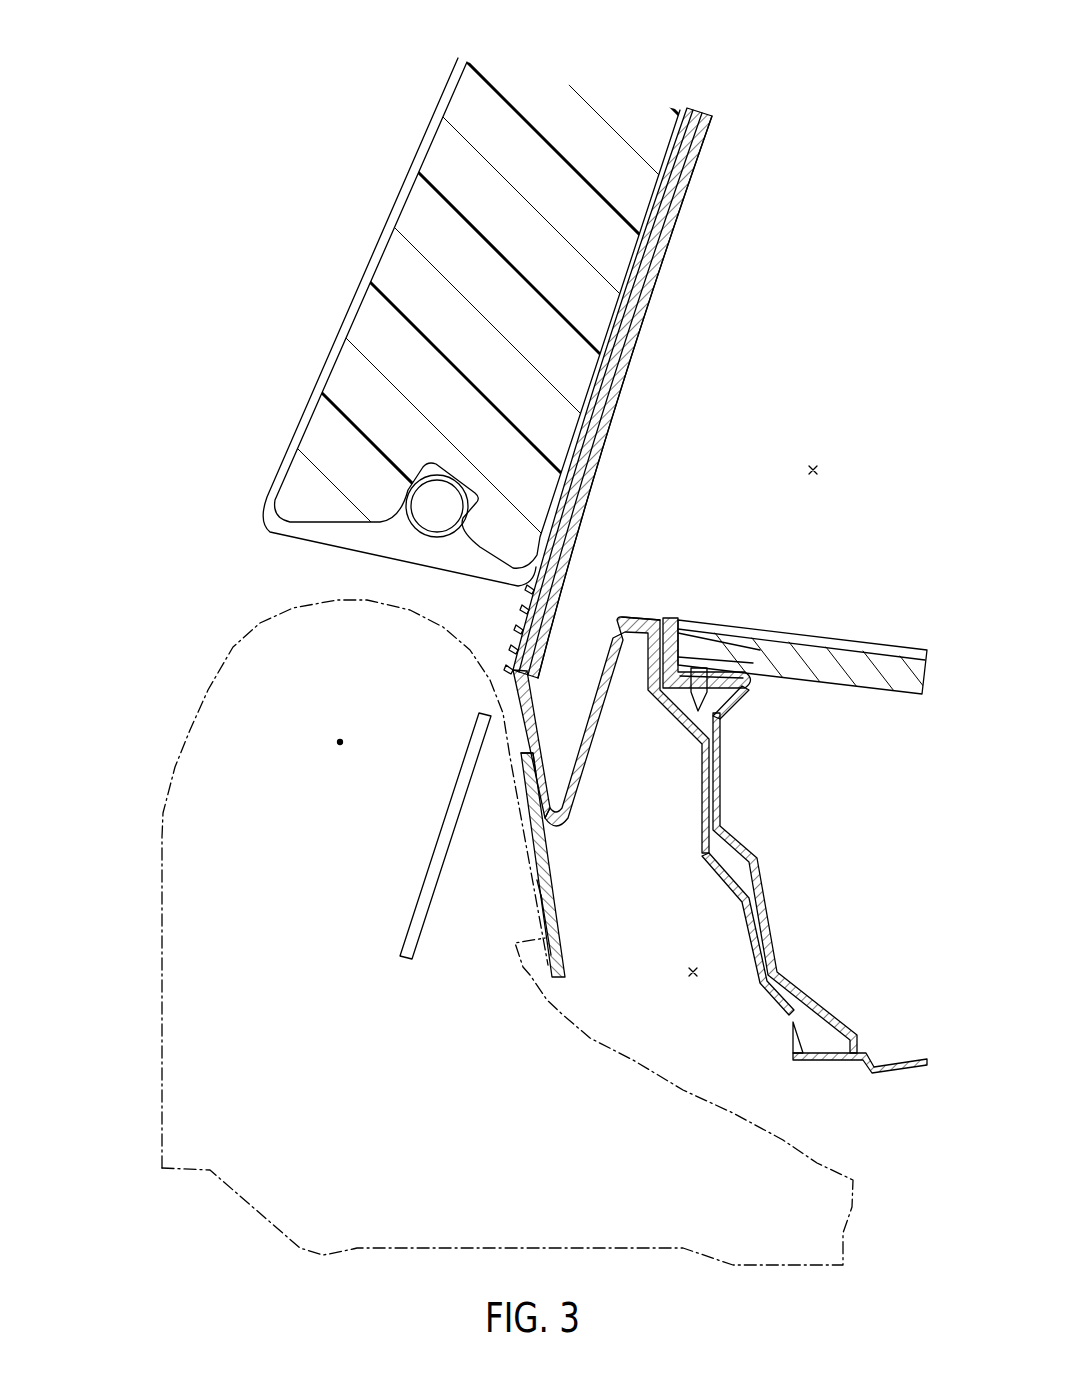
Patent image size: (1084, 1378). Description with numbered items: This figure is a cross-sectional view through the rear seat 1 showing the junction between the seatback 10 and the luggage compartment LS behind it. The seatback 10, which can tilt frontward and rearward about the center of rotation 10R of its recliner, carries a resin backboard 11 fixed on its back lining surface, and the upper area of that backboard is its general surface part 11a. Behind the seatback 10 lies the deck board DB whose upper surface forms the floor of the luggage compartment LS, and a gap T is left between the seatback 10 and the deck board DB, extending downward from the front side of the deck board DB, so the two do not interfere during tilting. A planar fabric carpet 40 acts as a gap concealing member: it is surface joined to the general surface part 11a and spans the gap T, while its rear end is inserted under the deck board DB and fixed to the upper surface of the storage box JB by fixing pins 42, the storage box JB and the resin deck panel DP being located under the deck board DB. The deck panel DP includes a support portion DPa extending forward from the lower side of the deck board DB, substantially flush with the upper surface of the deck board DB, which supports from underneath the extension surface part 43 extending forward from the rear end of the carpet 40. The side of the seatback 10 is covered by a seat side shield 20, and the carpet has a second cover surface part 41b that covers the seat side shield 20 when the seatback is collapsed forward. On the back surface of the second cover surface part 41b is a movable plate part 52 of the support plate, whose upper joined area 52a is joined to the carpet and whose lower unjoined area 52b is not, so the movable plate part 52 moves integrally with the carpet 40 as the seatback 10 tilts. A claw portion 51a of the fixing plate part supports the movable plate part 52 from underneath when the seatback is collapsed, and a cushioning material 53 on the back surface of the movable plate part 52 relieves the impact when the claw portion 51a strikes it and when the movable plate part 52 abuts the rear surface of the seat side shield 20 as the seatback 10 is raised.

The rear seat 1 is at (300, 51).
The seatback 10 is at (348, 180).
The center of rotation 10R is at (338, 742).
The backboard 11 is at (668, 247).
The general surface part 11a is at (650, 303).
The carpet 40 is at (635, 378).
The second cover surface part 41b is at (528, 707).
The fixing pins 42 is at (700, 693).
The extension surface part 43 is at (646, 616).
The claw portion 51a is at (423, 902).
The movable plate part 52 is at (572, 933).
The joined area 52a is at (532, 737).
The unjoined area 52b is at (557, 897).
The cushioning material 53 is at (537, 880).
The seat side shield 20 is at (223, 1046).
The luggage compartment LS is at (815, 468).
The deck board DB is at (832, 663).
The deck panel DP is at (690, 807).
The support portion DPa is at (630, 627).
The storage box JB is at (720, 775).
The gap T is at (693, 973).